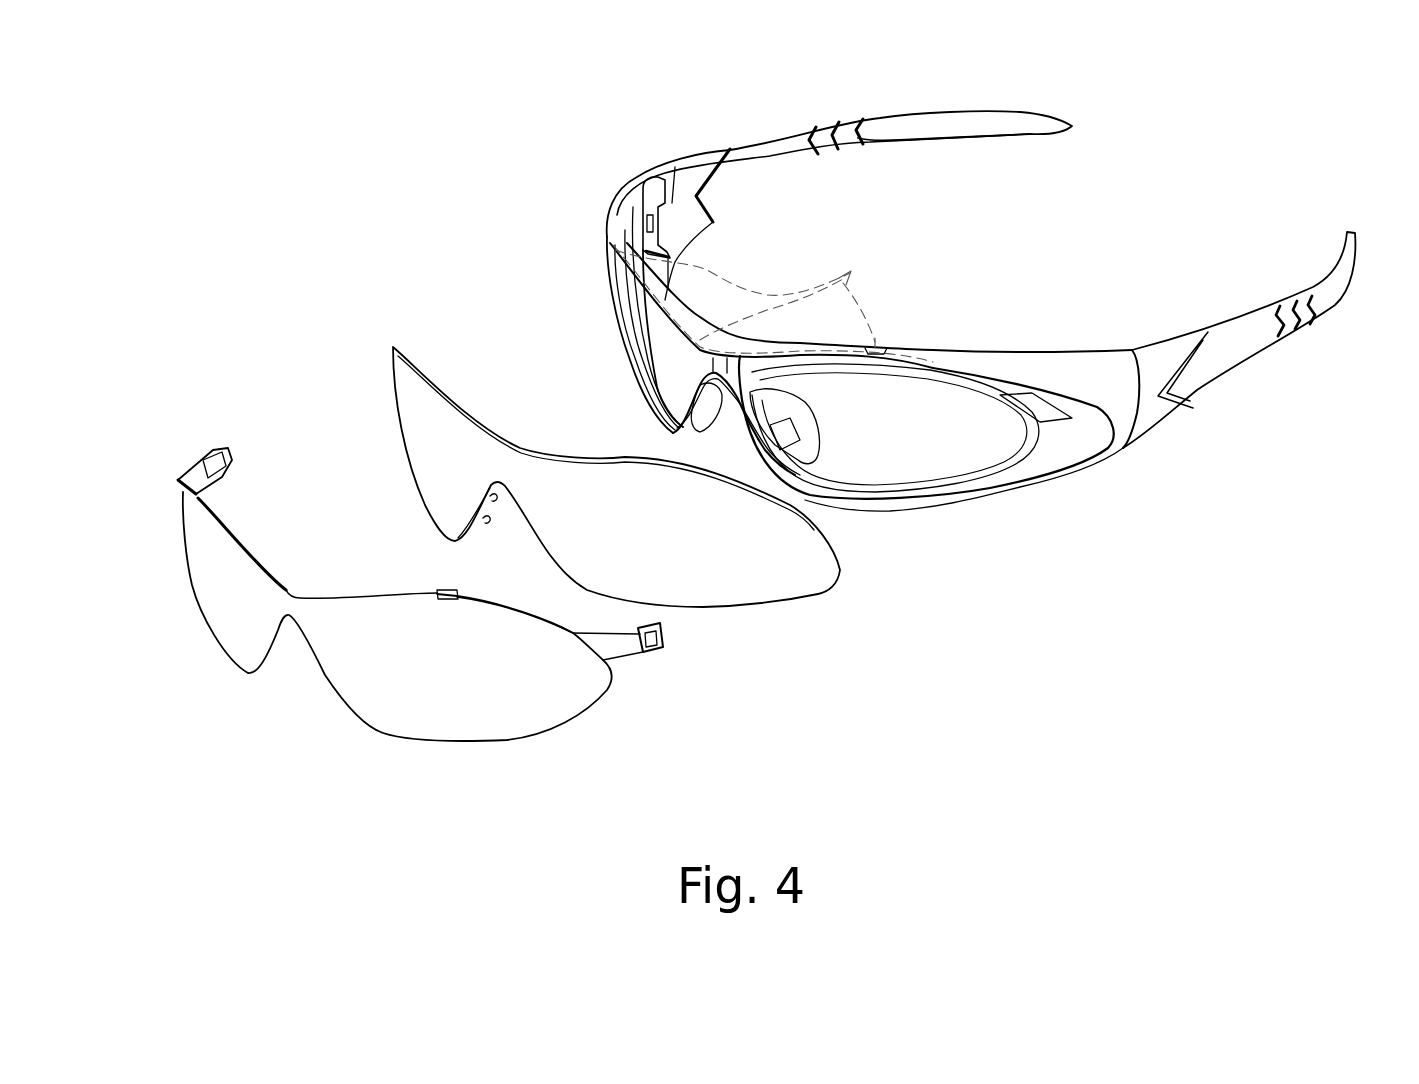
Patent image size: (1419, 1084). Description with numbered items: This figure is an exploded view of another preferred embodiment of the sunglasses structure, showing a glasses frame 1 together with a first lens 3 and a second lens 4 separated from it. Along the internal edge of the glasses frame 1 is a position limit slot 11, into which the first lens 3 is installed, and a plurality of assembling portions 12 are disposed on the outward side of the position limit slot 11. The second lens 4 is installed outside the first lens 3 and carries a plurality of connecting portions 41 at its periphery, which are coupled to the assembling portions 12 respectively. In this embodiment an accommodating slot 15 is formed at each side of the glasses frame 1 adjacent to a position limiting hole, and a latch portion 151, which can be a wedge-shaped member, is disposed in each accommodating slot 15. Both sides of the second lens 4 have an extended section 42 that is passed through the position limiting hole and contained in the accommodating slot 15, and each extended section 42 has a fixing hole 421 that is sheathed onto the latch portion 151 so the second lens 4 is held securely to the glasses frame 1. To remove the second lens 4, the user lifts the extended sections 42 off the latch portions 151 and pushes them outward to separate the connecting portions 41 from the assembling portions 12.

The glasses frame 1 is at (613, 202).
The position limit slot 11 is at (1004, 466).
The assembling portions 12 is at (773, 295).
The accommodating slot 15 is at (663, 176).
The latch portion 151 is at (653, 228).
The first lens 3 is at (420, 370).
The second lens 4 is at (350, 692).
The connecting portions 41 is at (440, 595).
The extended section 42 is at (193, 473).
The fixing hole 421 is at (227, 460).